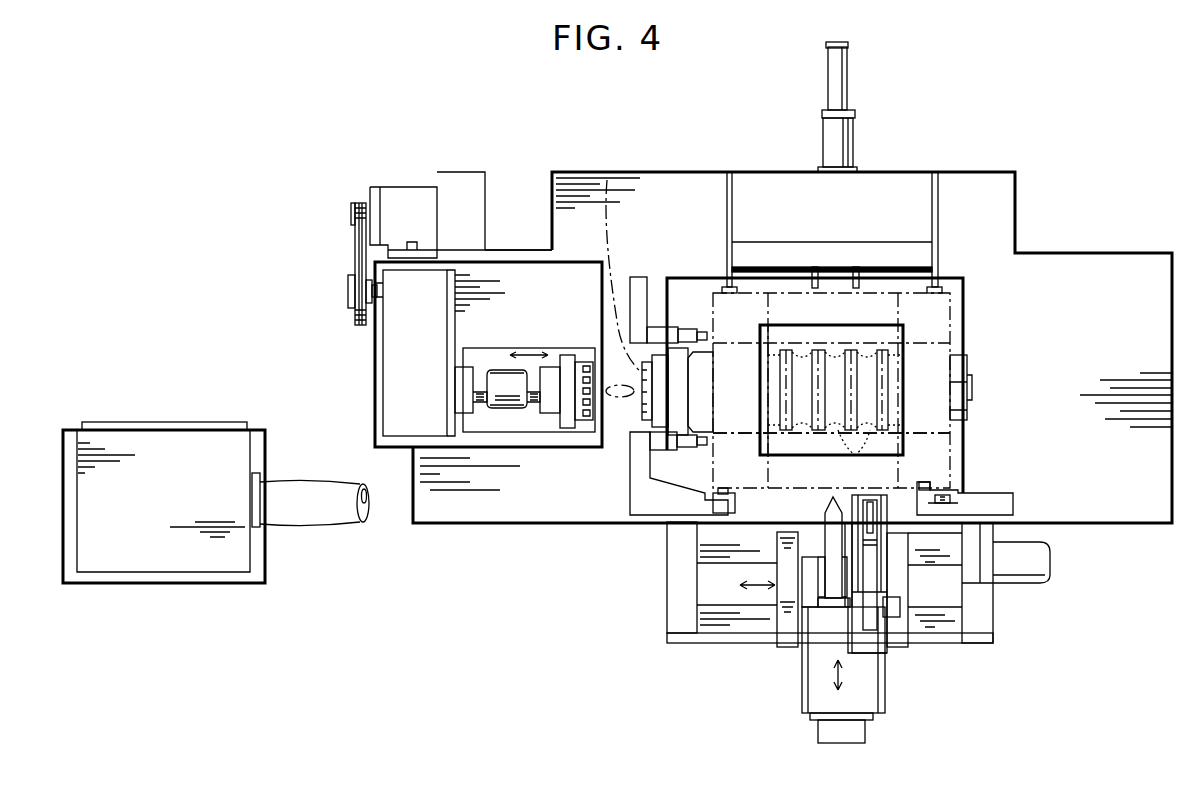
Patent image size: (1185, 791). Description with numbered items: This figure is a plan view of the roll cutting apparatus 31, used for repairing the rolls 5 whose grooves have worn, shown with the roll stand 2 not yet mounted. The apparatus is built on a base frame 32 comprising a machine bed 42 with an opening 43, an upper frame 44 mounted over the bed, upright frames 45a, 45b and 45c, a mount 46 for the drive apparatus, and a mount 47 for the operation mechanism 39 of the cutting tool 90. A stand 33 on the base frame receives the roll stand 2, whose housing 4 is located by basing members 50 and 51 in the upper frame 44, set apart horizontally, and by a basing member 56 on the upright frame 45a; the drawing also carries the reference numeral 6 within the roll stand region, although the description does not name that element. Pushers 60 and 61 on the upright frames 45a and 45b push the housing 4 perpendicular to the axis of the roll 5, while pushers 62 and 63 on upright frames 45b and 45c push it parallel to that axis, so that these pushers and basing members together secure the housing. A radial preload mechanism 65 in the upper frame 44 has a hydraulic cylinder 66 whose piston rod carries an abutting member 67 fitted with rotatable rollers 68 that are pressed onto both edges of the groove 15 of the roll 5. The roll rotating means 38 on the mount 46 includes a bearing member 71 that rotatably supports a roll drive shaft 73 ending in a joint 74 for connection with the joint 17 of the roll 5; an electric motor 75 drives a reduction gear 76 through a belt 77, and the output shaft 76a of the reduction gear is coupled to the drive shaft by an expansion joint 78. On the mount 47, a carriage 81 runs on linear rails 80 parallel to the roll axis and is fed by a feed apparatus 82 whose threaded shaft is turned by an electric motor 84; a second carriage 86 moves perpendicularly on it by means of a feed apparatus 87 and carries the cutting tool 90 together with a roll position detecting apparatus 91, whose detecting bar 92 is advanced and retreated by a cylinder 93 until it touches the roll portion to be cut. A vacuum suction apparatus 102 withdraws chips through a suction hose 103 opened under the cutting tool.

The roll stand 2 is at (952, 335).
The housing 4 is at (950, 445).
The rolls 5 is at (888, 380).
The spindle 6 is at (950, 356).
The groove 15 is at (855, 455).
The joint 17 is at (607, 180).
The roll cutting apparatus 31 is at (1052, 177).
The base frame 32 is at (1082, 246).
The stand 33 is at (848, 325).
The roll rotating means 38 is at (361, 361).
The operation mechanism 39 is at (706, 656).
The machine bed 42 is at (1148, 262).
The opening 43 is at (963, 305).
The upper frame 44 is at (906, 188).
The upright frame 45a is at (1003, 508).
The upright frame 45b is at (650, 498).
The upright frame 45c is at (638, 277).
The mount 46 is at (517, 262).
The mount 47 is at (667, 578).
The basing member 50 is at (957, 187).
The basing member 51 is at (733, 188).
The basing member 56 is at (930, 482).
The pusher 60 is at (942, 495).
The pusher 61 is at (735, 505).
The pusher 62 is at (688, 450).
The pusher 63 is at (684, 332).
The radial preload mechanism 65 is at (864, 129).
The hydraulic cylinder 66 is at (848, 80).
The abutting member 67 is at (814, 267).
The rotatable rollers 68 is at (856, 267).
The bearing member 71 is at (568, 392).
The roll drive shaft 73 is at (548, 400).
The joint 74 is at (585, 405).
The electric motor 75 is at (398, 187).
The reduction gear 76 is at (397, 395).
The output shaft 76a is at (475, 410).
The belt 77 is at (355, 240).
The expansion joint 78 is at (505, 400).
The linear rails 80 is at (708, 615).
The carriage 81 is at (778, 600).
The feed apparatus 82 is at (1008, 588).
The electric motor 84 is at (1035, 570).
The carriage 86 is at (806, 682).
The feed apparatus 87 is at (818, 727).
The cutting tool 90 is at (825, 575).
The roll position detecting apparatus 91 is at (877, 625).
The detecting bar 92 is at (873, 545).
The cylinder 93 is at (897, 615).
The vacuum suction apparatus 102 is at (156, 419).
The suction hose 103 is at (301, 505).